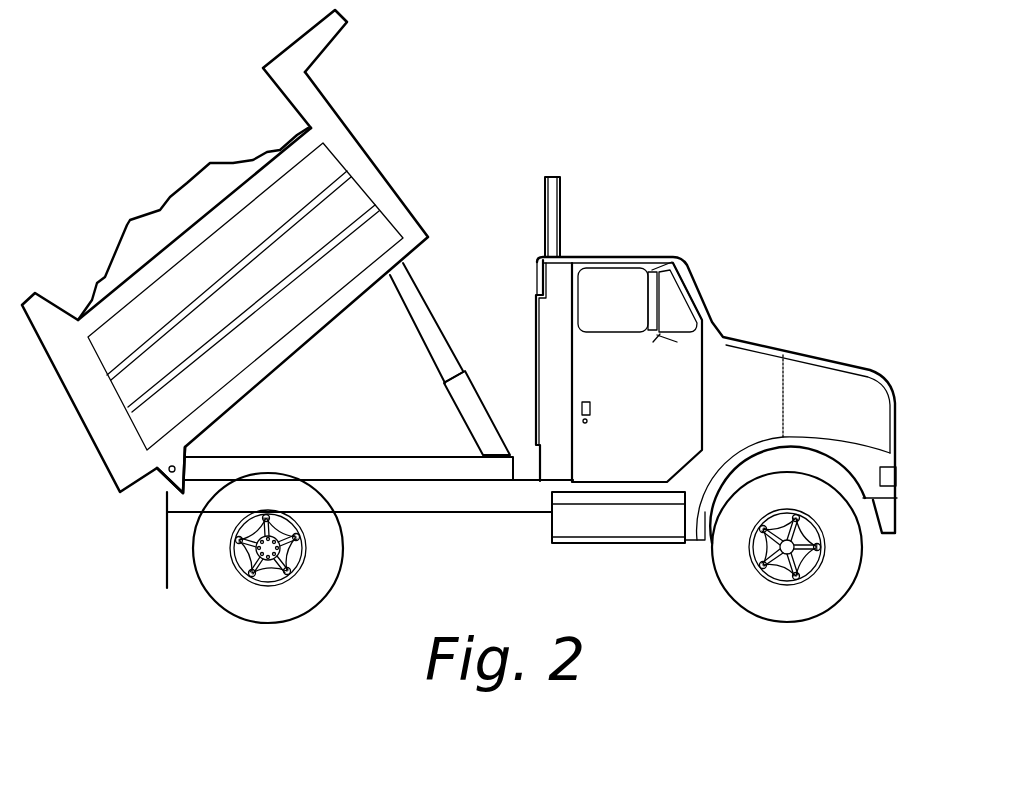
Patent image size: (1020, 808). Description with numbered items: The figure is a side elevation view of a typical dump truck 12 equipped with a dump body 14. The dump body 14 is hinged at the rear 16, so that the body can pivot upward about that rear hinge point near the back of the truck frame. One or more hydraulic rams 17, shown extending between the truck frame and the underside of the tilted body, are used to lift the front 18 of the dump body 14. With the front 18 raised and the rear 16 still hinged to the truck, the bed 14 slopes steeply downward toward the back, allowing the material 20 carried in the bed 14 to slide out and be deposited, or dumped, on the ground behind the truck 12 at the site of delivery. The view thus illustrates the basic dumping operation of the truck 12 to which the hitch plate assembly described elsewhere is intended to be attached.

The dump truck 12 is at (845, 205).
The dump body 14 is at (368, 163).
The rear 16 is at (163, 472).
The hydraulic ram 17 is at (430, 310).
The front 18 is at (297, 135).
The material 20 is at (145, 217).